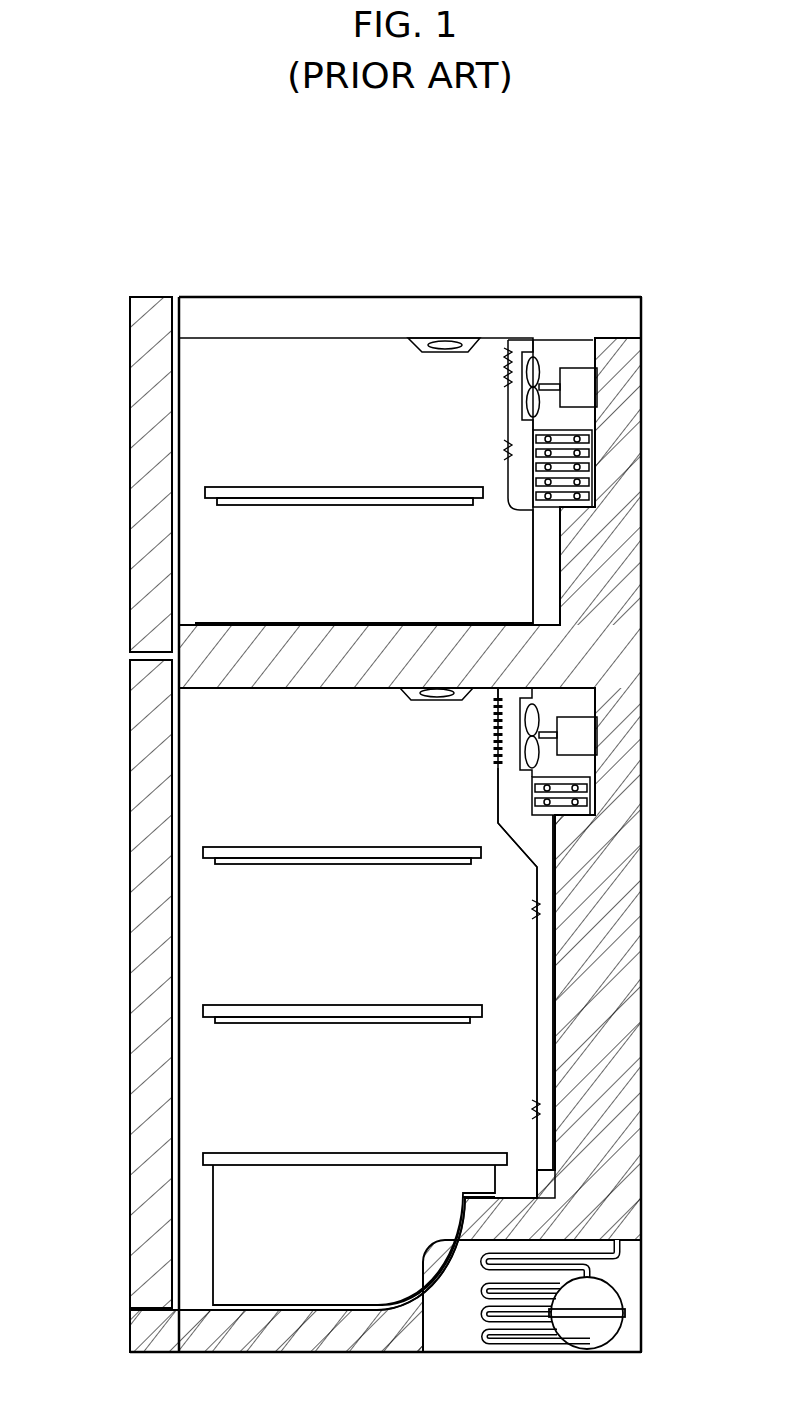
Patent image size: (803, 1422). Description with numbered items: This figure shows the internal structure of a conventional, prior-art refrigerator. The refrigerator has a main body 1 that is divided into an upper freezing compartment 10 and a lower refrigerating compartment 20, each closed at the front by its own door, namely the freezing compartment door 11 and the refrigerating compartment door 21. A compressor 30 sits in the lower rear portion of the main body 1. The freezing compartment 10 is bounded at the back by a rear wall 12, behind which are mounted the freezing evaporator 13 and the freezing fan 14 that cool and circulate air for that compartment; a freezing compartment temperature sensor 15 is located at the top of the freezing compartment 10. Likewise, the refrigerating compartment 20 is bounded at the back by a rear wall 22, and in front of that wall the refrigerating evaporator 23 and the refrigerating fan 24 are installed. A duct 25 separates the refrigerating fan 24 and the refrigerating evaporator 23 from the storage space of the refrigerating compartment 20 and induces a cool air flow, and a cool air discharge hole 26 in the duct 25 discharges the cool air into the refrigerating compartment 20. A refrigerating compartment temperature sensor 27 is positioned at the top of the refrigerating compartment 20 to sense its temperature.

The main body 1 is at (360, 297).
The freezing compartment 10 is at (258, 448).
The freezing compartment door 11 is at (150, 545).
The rear wall of the freezing compartment 12 is at (560, 578).
The freezing evaporator 13 is at (590, 462).
The freezing fan 14 is at (588, 388).
The freezing compartment temperature sensor 15 is at (440, 342).
The refrigerating compartment 20 is at (258, 842).
The refrigerating compartment door 21 is at (148, 968).
The rear wall of the refrigerating compartment 22 is at (560, 942).
The refrigerating evaporator 23 is at (590, 795).
The refrigerating fan 24 is at (588, 735).
The duct 25 is at (535, 885).
The cool air discharge hole 26 is at (495, 735).
The refrigerating compartment temperature sensor 27 is at (410, 697).
The compressor 30 is at (597, 1305).